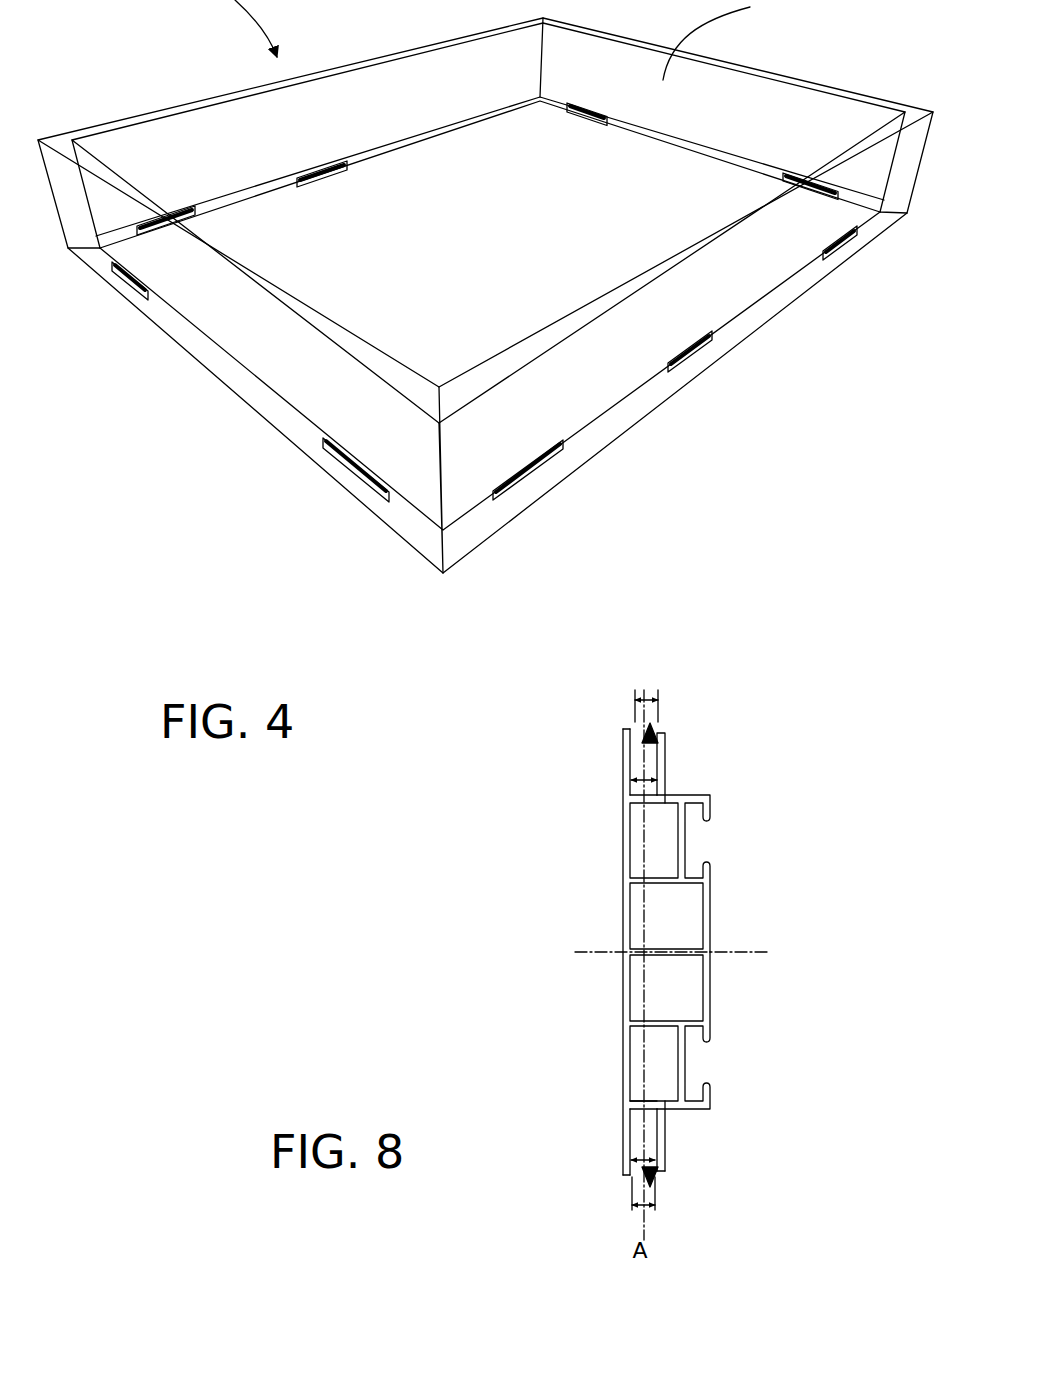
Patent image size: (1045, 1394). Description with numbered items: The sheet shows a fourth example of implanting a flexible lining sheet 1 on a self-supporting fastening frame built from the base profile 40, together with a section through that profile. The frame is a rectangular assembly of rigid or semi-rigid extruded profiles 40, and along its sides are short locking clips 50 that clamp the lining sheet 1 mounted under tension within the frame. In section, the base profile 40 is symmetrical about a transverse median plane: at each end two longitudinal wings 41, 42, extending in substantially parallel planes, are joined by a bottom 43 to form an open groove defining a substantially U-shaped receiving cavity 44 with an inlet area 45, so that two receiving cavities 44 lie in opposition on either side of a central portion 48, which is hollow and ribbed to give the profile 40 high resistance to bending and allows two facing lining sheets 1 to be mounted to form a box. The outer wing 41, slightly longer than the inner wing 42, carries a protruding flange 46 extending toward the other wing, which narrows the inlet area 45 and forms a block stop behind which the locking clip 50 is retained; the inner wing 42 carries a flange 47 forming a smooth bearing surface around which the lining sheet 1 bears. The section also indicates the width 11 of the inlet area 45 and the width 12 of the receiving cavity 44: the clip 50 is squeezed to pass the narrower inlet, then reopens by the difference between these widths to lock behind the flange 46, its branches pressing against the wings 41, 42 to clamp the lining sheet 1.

In FIG. 4, the lining sheet 1 is at (512, 226).
In FIG. 4, the base profile 40 is at (358, 122).
In FIG. 8, the base profile 40 is at (785, 824).
In FIG. 4, the locking clip 50 is at (333, 162).
In FIG. 8, the longitudinal wing 41 is at (625, 763).
In FIG. 8, the longitudinal wing 42 is at (661, 772).
In FIG. 8, the bottom 43 is at (638, 1110).
In FIG. 8, the receiving cavity 44 is at (655, 754).
In FIG. 8, the inlet area 45 is at (650, 735).
In FIG. 8, the flange 46 is at (635, 728).
In FIG. 8, the flange 47 is at (665, 1172).
In FIG. 8, the central portion 48 is at (627, 902).
In FIG. 8, the width of the inlet area 11 is at (644, 953).
In FIG. 8, the width of the receiving cavity 12 is at (644, 958).